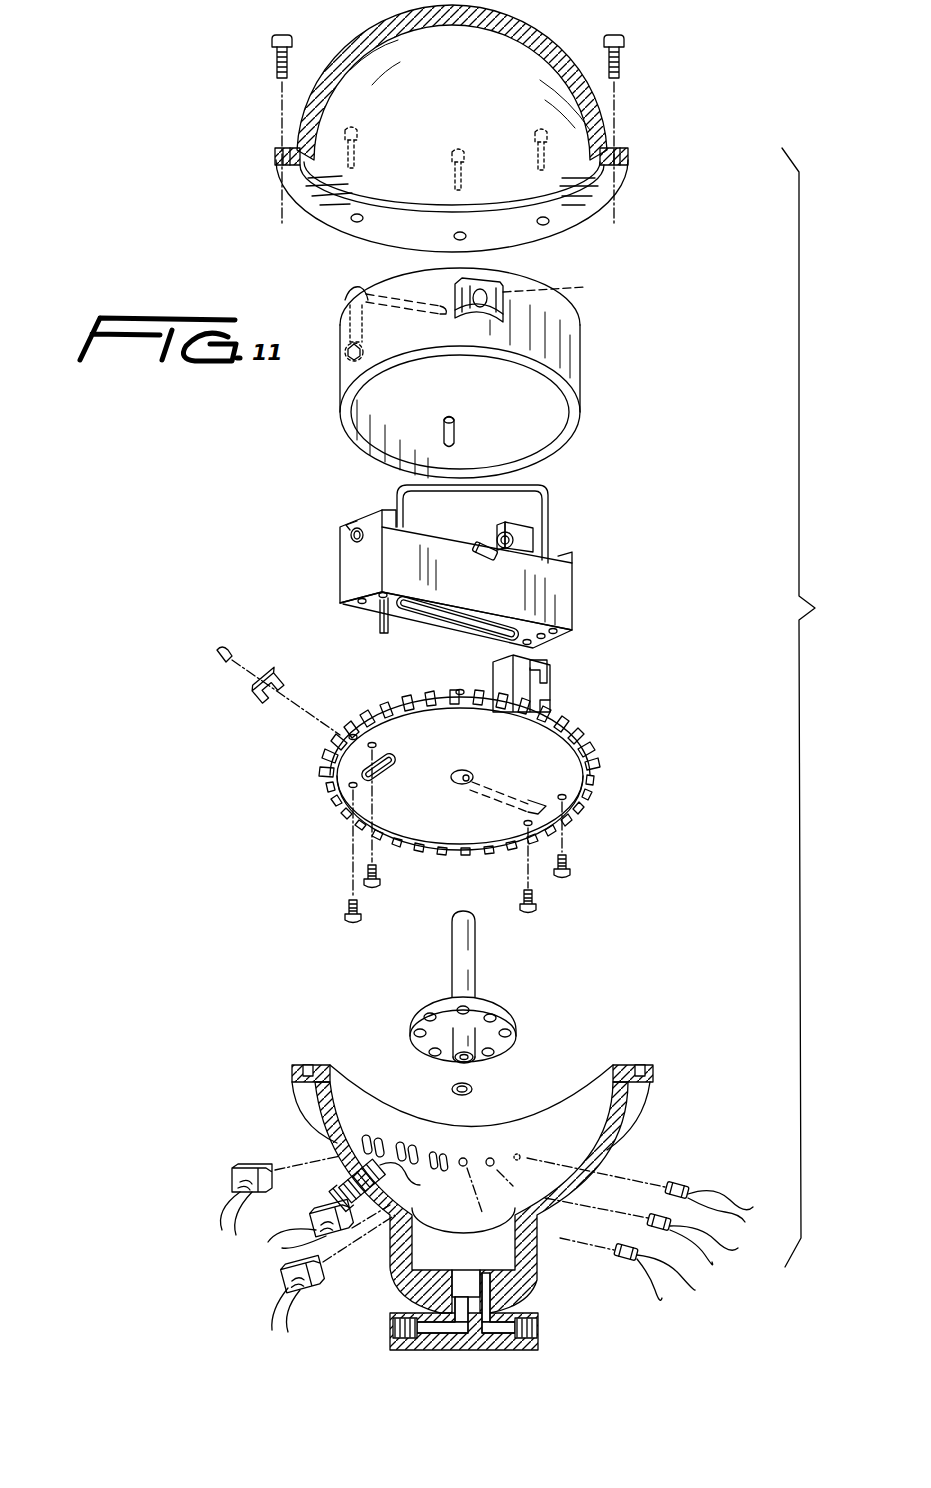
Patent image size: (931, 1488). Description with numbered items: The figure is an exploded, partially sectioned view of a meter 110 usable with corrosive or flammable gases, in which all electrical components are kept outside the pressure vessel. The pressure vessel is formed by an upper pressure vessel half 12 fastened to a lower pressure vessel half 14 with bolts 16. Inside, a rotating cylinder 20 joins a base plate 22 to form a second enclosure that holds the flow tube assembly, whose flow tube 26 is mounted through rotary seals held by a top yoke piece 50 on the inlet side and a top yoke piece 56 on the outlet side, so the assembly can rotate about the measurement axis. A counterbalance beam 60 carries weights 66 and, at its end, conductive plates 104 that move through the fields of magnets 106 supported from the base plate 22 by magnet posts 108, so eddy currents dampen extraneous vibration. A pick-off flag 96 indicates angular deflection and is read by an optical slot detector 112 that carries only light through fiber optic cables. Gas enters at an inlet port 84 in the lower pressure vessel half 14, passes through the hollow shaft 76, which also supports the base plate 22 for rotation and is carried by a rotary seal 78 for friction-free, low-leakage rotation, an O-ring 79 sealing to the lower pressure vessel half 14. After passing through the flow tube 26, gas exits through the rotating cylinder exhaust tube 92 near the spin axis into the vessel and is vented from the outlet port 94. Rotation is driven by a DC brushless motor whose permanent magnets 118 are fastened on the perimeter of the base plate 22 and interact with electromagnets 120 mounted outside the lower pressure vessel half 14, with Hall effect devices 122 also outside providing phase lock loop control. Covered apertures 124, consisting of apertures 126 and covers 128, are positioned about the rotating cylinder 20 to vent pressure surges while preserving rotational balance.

The upper pressure vessel half 12 is at (528, 34).
The lower pressure vessel half 14 is at (530, 1286).
The bolts 16 is at (283, 35).
The rotating cylinder 20 is at (575, 366).
The base plate 22 is at (560, 760).
The flow tube 26 is at (532, 492).
The top yoke piece 50 is at (573, 563).
The top yoke piece 56 is at (372, 518).
The counterbalance beam 60 is at (478, 546).
The weights 66 is at (508, 530).
The hollow shaft 76 is at (470, 960).
The rotary seal 78 is at (452, 1067).
The O-ring 79 is at (473, 1089).
The inlet port 84 is at (392, 1330).
The rotating cylinder exhaust tube 92 is at (354, 288).
The outlet port 94 is at (538, 1330).
The pick-off flag 96 is at (378, 628).
The conductive plates 104 is at (534, 536).
The magnets 106 is at (545, 662).
The magnet posts 108 is at (548, 690).
The meter 110 is at (823, 707).
The optical slot detector 112 is at (432, 1168).
The permanent magnets 118 is at (262, 700).
The electromagnets 120 is at (238, 1172).
The Hall effect devices 122 is at (658, 1216).
The covered apertures 124 is at (451, 295).
The apertures 126 is at (452, 416).
The covers 128 is at (492, 285).